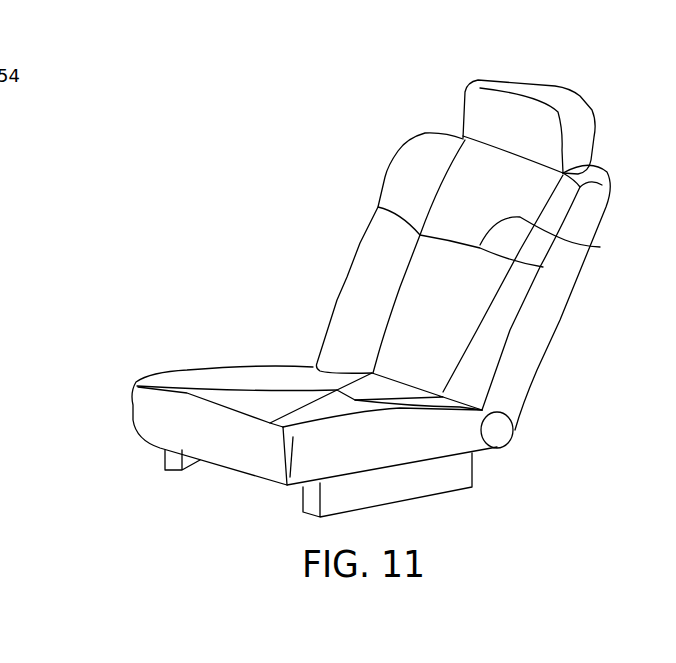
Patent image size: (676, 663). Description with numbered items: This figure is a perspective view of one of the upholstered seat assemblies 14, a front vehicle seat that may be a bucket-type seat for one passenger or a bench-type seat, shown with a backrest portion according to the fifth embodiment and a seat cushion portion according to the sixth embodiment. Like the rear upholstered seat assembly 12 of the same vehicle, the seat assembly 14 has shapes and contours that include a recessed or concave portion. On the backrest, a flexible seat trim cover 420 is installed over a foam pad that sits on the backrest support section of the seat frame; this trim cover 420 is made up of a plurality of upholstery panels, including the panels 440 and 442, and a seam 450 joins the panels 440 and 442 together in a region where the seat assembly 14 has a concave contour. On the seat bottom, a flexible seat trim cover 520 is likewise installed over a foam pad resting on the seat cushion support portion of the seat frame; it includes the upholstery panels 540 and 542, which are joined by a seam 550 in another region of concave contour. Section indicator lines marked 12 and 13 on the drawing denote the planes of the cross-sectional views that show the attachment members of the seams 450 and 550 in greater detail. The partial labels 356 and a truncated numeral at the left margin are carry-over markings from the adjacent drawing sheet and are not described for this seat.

The upholstered seat assembly 14 is at (580, 49).
The upholstered seat assembly 12 is at (485, 182).
The section line 13- 13 is at (437, 380).
The flexible seat trim cover 420 is at (362, 236).
The upholstery panel 440 is at (458, 198).
The upholstery panel 442 is at (470, 287).
The seam 450 is at (600, 247).
The flexible seat trim cover 520 is at (247, 380).
The upholstery panel 540 is at (365, 390).
The upholstery panel 542 is at (247, 403).
The seam 550 is at (345, 403).
The adjacent figure element 356 is at (0, 118).